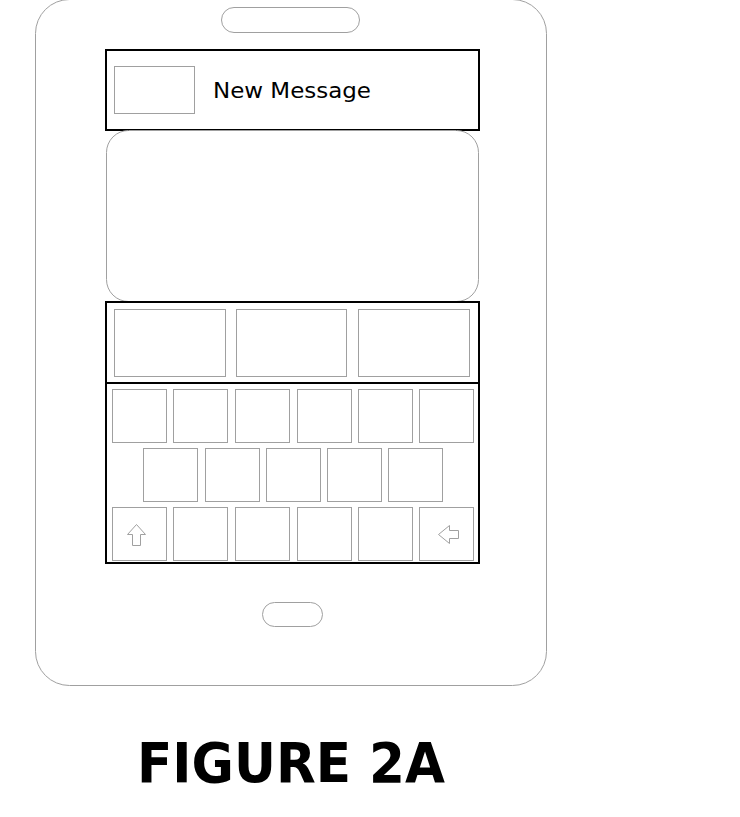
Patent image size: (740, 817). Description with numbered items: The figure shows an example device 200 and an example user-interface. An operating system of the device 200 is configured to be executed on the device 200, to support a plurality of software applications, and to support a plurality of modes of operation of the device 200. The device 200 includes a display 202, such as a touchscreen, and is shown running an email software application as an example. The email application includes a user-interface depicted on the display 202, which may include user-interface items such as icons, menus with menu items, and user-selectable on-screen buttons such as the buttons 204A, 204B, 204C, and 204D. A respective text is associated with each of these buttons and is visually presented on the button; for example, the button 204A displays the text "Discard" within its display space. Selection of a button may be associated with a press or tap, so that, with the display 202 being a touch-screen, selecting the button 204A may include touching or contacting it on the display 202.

The device 200 is at (547, 85).
The display 202 is at (160, 565).
The button 204A is at (415, 308).
The button 204B is at (294, 308).
The button 204C is at (171, 308).
The button 204D is at (155, 67).